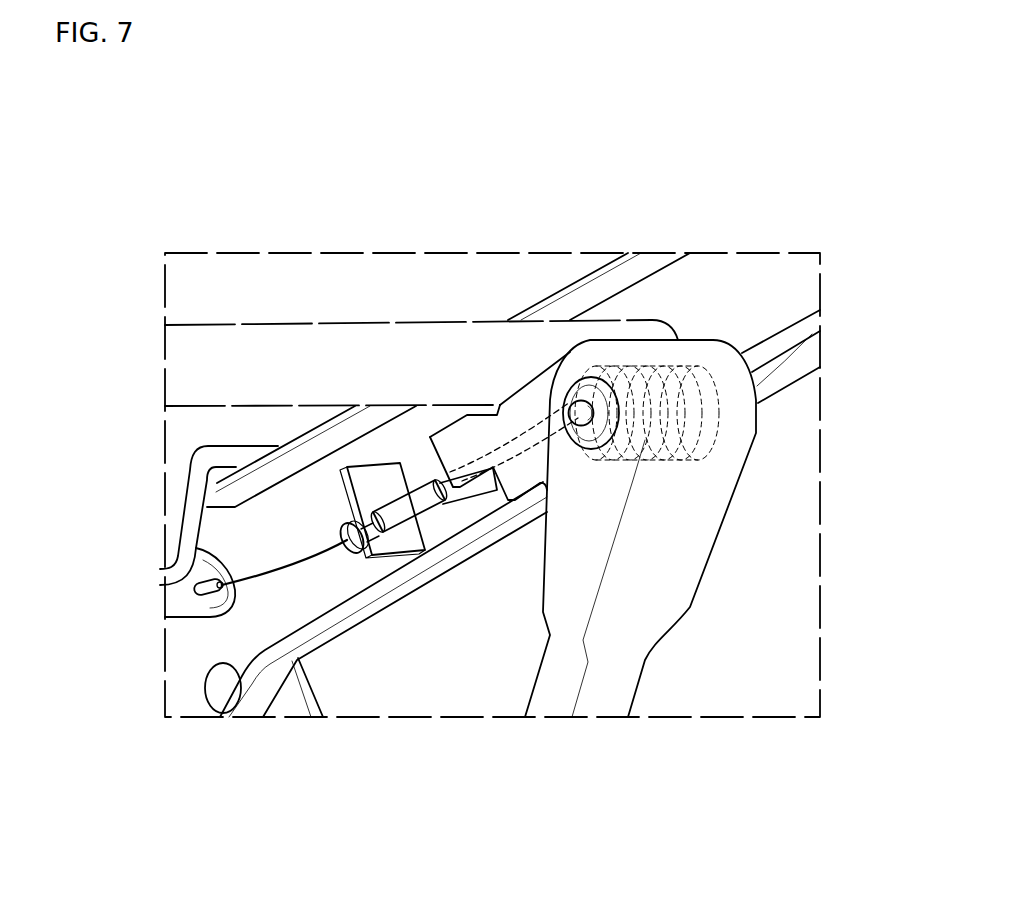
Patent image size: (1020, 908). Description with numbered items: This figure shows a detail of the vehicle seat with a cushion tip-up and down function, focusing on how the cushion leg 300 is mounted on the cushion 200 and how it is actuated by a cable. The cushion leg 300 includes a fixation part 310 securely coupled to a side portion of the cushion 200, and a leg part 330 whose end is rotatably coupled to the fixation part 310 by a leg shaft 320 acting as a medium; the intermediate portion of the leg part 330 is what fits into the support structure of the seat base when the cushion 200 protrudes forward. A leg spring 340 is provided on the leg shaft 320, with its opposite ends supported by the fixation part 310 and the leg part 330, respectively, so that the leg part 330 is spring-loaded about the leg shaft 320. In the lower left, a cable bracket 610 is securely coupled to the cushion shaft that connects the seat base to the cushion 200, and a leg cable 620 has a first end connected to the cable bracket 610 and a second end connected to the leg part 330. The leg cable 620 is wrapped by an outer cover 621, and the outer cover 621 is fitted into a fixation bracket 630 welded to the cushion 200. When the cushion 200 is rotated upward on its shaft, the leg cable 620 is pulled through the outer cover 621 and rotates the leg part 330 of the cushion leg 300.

The cushion 200 is at (313, 500).
The cushion leg 300 is at (681, 489).
The fixation part 310 is at (518, 418).
The leg shaft 320 is at (578, 415).
The leg part 330 is at (610, 683).
The leg spring 340 is at (672, 382).
The cable bracket 610 is at (182, 602).
The leg cable 620 is at (280, 573).
The outer cover 621 is at (407, 513).
The fixation bracket 630 is at (378, 493).